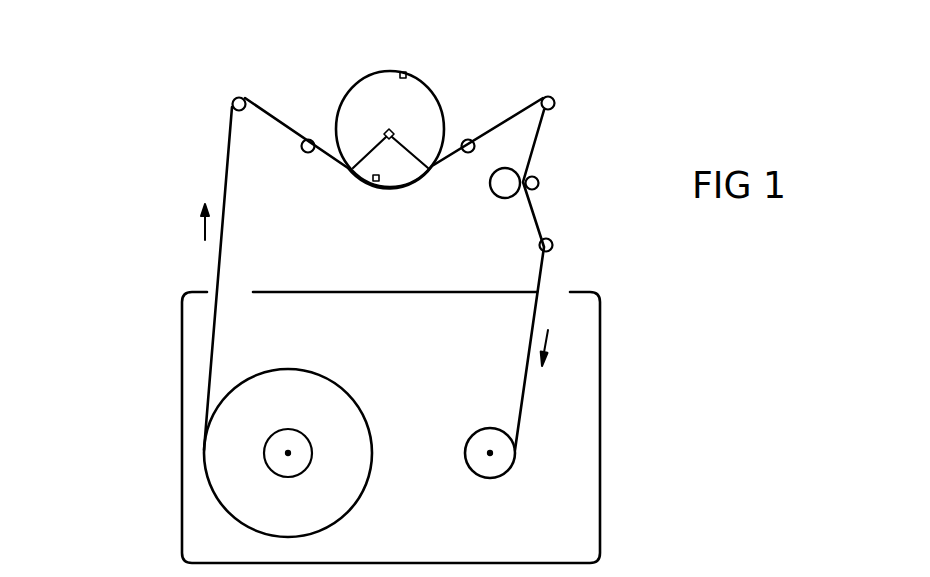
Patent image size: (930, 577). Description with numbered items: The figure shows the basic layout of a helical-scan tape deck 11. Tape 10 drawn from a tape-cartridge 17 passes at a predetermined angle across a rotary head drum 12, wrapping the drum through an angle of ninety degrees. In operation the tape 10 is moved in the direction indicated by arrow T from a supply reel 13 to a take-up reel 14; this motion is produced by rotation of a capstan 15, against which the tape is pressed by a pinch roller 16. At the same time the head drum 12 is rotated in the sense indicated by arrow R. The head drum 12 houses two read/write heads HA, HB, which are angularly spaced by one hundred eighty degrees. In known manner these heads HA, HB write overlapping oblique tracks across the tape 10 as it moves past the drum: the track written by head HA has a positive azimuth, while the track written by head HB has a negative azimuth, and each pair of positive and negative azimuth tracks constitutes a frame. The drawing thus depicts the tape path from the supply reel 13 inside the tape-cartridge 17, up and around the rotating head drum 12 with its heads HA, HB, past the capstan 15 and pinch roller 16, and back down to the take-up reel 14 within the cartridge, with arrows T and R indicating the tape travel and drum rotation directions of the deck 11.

The tape 10 is at (226, 145).
The helical-scan tape deck 11 is at (141, 266).
The rotary head drum 12 is at (352, 86).
The supply reel 13 is at (348, 477).
The take-up reel 14 is at (483, 474).
The capstan 15 is at (540, 183).
The pinch roller 16 is at (498, 193).
The tape-cartridge 17 is at (182, 437).
The read/write head HA is at (377, 184).
The read/write head HB is at (409, 72).
The arrow R is at (380, 54).
The arrow T is at (203, 227).